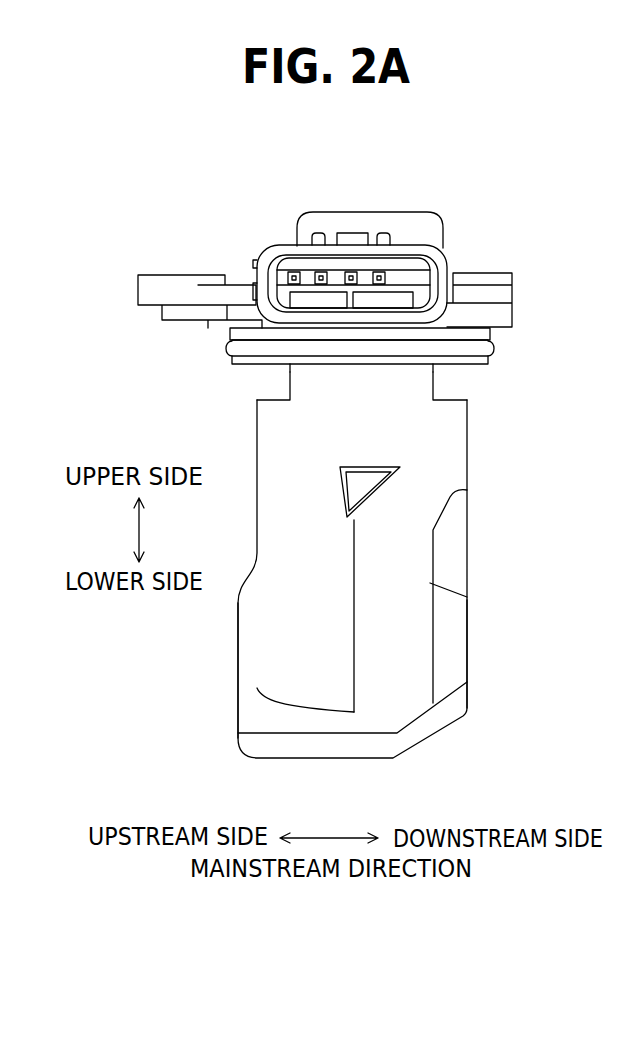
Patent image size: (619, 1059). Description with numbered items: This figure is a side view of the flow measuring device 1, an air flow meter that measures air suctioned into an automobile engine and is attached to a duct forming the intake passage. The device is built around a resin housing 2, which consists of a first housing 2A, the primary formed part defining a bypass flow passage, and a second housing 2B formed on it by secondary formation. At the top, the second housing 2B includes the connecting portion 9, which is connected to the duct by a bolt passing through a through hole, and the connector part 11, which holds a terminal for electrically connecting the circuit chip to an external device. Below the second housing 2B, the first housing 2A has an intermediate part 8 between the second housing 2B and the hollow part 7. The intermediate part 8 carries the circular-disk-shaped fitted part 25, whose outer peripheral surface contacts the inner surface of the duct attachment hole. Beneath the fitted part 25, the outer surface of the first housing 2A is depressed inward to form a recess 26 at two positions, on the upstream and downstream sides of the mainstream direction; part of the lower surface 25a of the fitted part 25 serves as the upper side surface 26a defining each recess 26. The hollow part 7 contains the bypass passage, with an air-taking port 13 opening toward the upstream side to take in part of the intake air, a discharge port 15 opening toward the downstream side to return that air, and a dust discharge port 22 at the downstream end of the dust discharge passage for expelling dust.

The flow measuring device 1 is at (511, 183).
The connector part 11 is at (402, 252).
The connecting portion 9 is at (171, 283).
The housing 2 is at (375, 522).
The second housing 2B is at (495, 273).
The first housing 2A is at (468, 470).
The intermediate part 8 is at (413, 378).
The fitted part 25 is at (478, 333).
The lower surface 25a is at (233, 366).
The recess 26 is at (289, 382).
The upper side surface 26a is at (264, 366).
The hollow part 7 is at (460, 438).
The air-taking port 13 is at (237, 655).
The dust discharge port 22 is at (468, 645).
The discharge port 15 is at (355, 667).